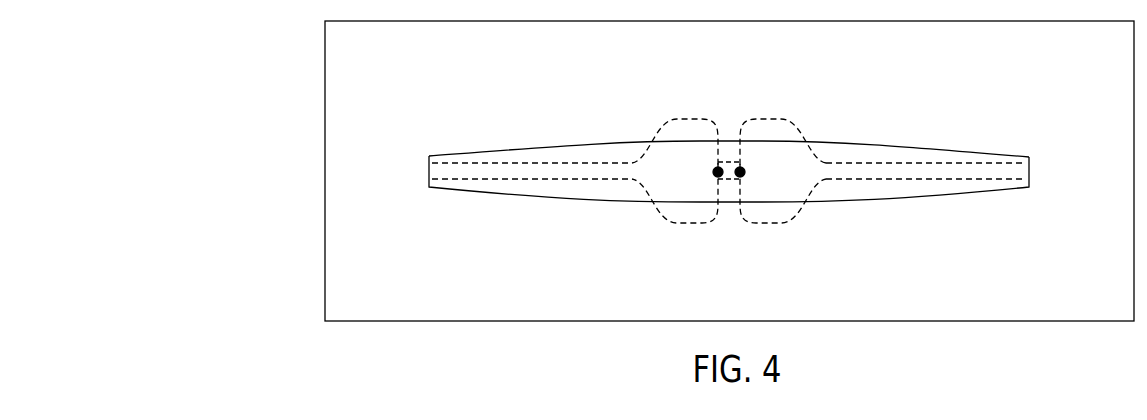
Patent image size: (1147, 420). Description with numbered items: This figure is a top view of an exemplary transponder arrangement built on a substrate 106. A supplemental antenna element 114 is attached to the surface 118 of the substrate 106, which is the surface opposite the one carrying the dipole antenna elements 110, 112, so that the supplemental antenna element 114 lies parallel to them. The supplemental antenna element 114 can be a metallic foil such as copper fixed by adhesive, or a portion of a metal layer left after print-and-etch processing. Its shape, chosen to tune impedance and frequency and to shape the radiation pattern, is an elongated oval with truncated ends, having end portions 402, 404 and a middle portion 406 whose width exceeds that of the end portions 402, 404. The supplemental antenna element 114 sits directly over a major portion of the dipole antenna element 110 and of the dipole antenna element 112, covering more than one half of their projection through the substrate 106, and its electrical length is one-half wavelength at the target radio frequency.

The substrate 106 is at (971, 273).
The dipole antenna element 110 is at (557, 181).
The dipole antenna element 112 is at (880, 181).
The supplemental antenna element 114 is at (625, 148).
The surface 118 is at (357, 98).
The end portion 402 is at (455, 160).
The end portion 404 is at (993, 160).
The middle portion 406 is at (730, 187).